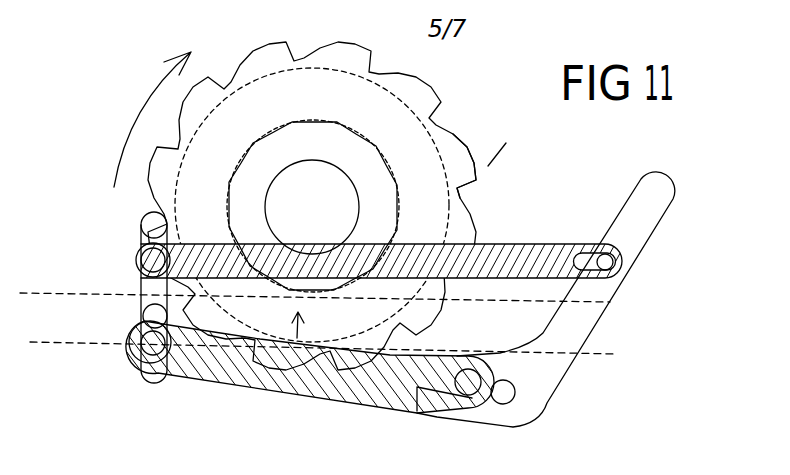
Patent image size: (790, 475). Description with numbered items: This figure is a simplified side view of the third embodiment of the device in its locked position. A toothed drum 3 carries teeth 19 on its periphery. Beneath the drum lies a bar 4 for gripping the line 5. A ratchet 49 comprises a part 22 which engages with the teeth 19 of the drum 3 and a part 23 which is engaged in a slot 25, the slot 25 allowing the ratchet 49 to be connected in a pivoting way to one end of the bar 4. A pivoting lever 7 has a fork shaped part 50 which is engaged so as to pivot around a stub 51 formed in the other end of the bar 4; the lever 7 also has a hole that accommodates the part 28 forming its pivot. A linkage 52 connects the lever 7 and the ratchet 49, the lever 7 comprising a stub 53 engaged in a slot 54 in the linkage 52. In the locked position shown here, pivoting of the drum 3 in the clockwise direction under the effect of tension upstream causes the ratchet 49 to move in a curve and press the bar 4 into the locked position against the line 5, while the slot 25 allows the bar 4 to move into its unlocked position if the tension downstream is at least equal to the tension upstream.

The drum 3 is at (456, 91).
The teeth 19 is at (437, 118).
The linkage 52 is at (521, 256).
The slot 54 is at (587, 259).
The stub 53 is at (614, 265).
The bar 4 is at (243, 384).
The fork shaped part 50 is at (440, 411).
The pivoting lever 7 is at (578, 327).
The stub 51 is at (468, 388).
The part forming pivot 28 is at (517, 392).
The slot 25 is at (152, 385).
The part 22 is at (148, 220).
The ratchet 49 is at (157, 285).
The part 23 is at (145, 350).
The line 5 is at (63, 328).